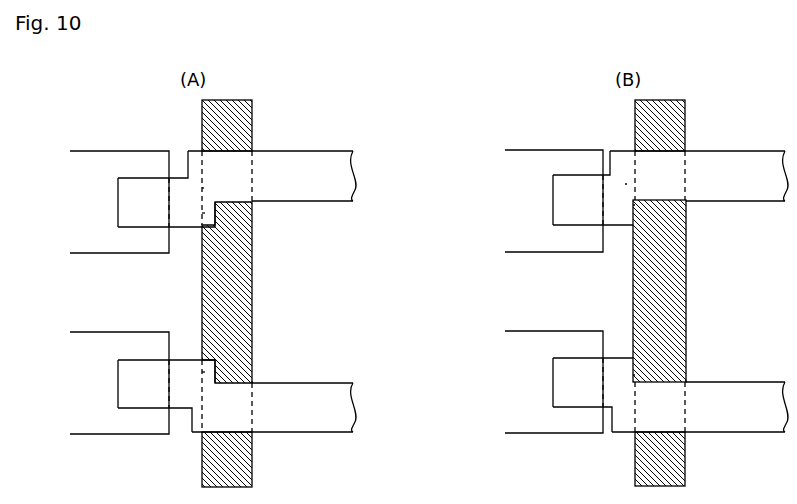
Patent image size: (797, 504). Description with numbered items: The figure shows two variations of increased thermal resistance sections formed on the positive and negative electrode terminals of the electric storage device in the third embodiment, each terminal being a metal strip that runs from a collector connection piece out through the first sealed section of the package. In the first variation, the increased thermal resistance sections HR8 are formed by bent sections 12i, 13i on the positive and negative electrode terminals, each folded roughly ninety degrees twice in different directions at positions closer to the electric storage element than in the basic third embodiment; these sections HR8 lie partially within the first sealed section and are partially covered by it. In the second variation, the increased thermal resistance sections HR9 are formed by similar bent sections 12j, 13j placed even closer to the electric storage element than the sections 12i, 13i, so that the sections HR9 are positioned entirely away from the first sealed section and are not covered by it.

The folded/bent section 13i is at (198, 213).
The folded/bent section 12i is at (203, 372).
The folded/bent section 13j is at (626, 205).
The folded/bent section 12j is at (625, 375).
The increased thermal resistance section HR8 is at (203, 187).
The increased thermal resistance section HR9 is at (625, 184).